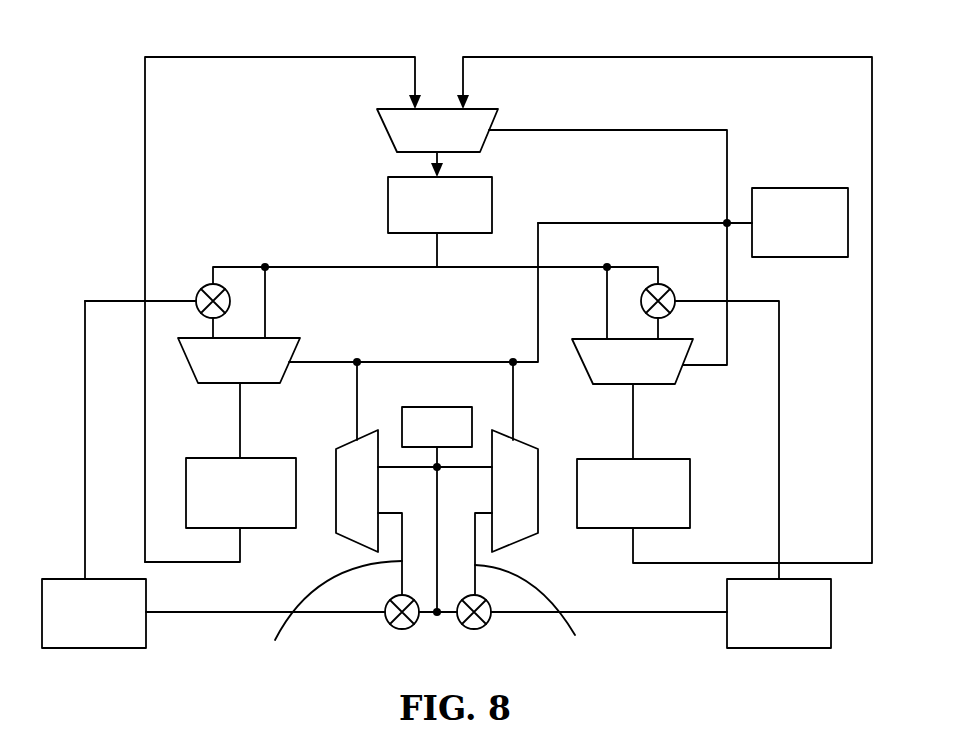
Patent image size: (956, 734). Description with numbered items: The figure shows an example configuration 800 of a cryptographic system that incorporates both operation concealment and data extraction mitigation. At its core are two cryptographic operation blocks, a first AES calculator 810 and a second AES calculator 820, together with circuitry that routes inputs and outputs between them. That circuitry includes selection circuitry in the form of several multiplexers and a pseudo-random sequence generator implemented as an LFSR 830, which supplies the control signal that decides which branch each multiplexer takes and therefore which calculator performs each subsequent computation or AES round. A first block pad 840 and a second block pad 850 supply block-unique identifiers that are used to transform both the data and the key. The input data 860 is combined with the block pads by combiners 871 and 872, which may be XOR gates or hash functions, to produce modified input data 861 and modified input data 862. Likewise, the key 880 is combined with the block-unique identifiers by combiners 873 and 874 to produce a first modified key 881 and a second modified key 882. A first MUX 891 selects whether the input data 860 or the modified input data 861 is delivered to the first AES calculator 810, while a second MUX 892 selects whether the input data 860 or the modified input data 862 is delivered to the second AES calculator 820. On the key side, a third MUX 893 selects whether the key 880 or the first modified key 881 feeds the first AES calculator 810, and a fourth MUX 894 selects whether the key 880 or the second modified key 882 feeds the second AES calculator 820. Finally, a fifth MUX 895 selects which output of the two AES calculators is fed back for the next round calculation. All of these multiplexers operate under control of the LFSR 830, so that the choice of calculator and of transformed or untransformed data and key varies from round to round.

The example configuration 800 is at (63, 60).
The fifth MUX 895 is at (475, 109).
The input data 860 is at (388, 205).
The LFSR 830 is at (783, 221).
The modified input data 861 is at (213, 326).
The modified input data 862 is at (658, 329).
The combiner 871 is at (201, 289).
The combiner 872 is at (671, 290).
The first MUX 891 is at (210, 385).
The second MUX 892 is at (682, 385).
The third MUX 893 is at (342, 446).
The fourth MUX 894 is at (539, 449).
The key 880 is at (439, 407).
The first AES calculator 810 is at (262, 529).
The second AES calculator 820 is at (610, 529).
The combiner 873 is at (387, 629).
The combiner 874 is at (491, 626).
The first modified key 881 is at (329, 617).
The second modified key 882 is at (540, 615).
The first block pad 840 is at (148, 636).
The second block pad 850 is at (727, 630).